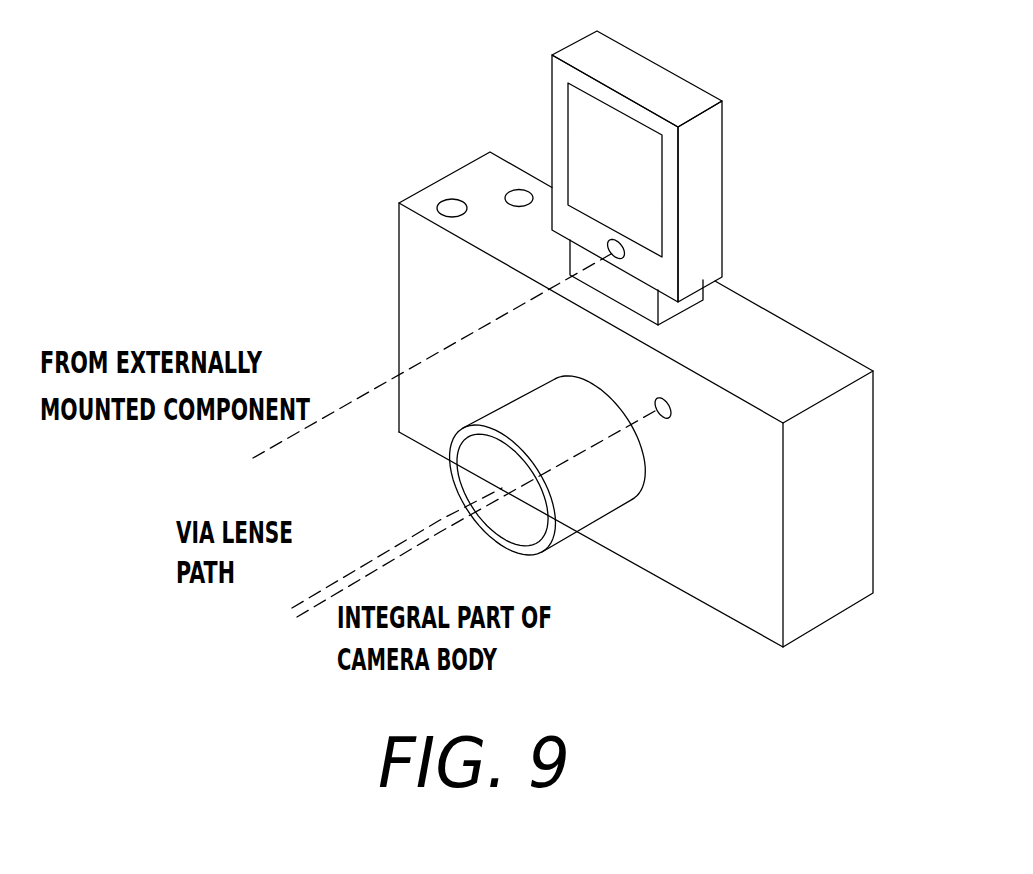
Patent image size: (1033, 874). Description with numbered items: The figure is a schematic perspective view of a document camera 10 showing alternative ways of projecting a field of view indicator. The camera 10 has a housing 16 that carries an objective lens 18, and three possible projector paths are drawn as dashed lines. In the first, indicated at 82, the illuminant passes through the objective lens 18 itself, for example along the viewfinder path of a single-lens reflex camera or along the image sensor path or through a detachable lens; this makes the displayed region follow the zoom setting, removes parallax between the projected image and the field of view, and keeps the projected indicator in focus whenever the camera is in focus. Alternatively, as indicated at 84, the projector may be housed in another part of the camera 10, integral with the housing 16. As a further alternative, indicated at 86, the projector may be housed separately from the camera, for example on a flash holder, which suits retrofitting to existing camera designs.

The document camera 10 is at (438, 104).
The housing 16 is at (823, 360).
The objective lens 18 is at (628, 478).
The objective lens projector path 82 is at (387, 553).
The camera-housed projector path 84 is at (437, 540).
The flash holder projector path 86 is at (378, 383).